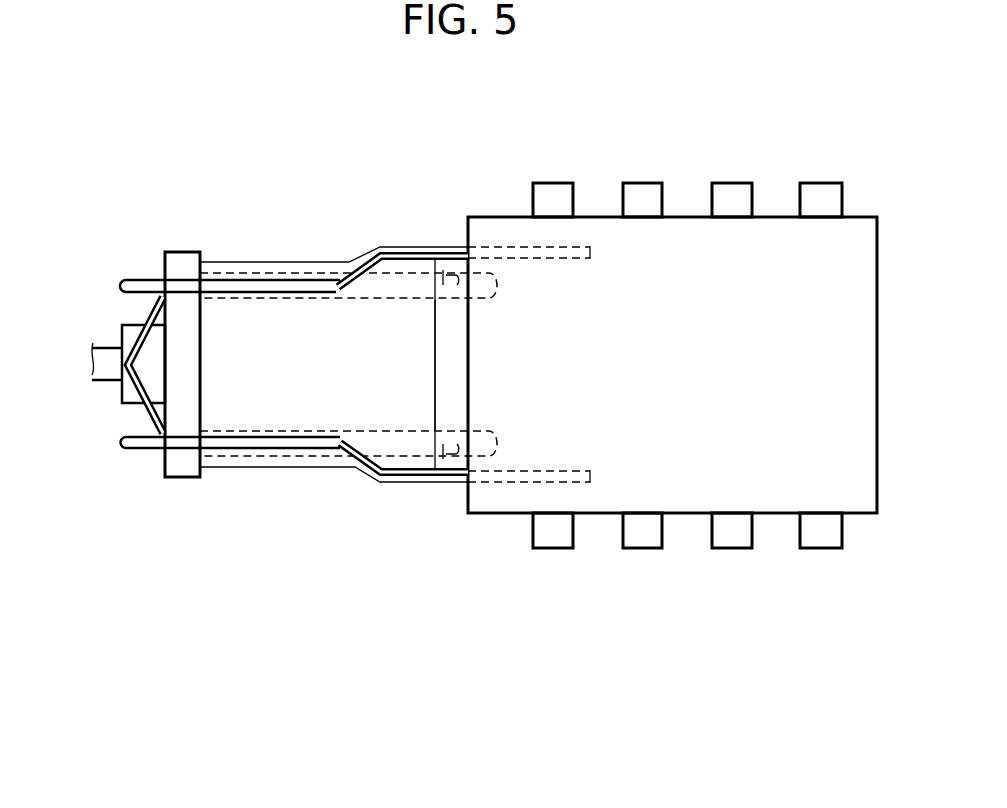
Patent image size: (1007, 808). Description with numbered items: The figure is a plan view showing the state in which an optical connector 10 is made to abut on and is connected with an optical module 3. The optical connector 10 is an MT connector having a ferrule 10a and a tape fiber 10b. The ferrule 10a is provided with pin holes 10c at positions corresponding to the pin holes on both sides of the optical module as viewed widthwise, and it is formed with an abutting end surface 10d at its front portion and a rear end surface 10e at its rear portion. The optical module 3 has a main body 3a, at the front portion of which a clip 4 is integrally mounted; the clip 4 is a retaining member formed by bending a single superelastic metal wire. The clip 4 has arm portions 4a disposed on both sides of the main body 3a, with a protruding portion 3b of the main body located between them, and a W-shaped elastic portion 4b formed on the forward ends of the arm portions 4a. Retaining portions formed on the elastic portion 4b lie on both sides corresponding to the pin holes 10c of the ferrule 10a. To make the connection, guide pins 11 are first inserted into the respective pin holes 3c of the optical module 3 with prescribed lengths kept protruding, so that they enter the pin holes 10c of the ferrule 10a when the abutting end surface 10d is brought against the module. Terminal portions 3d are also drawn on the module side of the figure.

The optical module 3 is at (639, 357).
The main body 3a is at (770, 485).
The protruding portion 3b is at (452, 417).
The pin holes 3c is at (453, 247).
The terminal pads 3d is at (740, 192).
The clip 4 is at (256, 355).
The arm portions 4a is at (305, 262).
The elastic portion 4b is at (122, 333).
The optical connector 10 is at (304, 378).
The ferrule 10a is at (218, 437).
The tape fiber 10b is at (107, 383).
The pin holes 10c is at (260, 288).
The abutting end surface 10d is at (442, 367).
The rear end surface 10e is at (140, 305).
The guide pins 11 is at (415, 280).